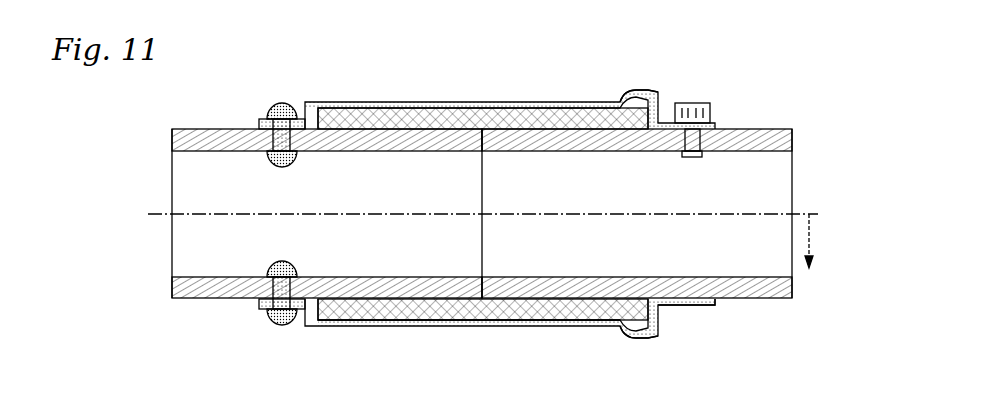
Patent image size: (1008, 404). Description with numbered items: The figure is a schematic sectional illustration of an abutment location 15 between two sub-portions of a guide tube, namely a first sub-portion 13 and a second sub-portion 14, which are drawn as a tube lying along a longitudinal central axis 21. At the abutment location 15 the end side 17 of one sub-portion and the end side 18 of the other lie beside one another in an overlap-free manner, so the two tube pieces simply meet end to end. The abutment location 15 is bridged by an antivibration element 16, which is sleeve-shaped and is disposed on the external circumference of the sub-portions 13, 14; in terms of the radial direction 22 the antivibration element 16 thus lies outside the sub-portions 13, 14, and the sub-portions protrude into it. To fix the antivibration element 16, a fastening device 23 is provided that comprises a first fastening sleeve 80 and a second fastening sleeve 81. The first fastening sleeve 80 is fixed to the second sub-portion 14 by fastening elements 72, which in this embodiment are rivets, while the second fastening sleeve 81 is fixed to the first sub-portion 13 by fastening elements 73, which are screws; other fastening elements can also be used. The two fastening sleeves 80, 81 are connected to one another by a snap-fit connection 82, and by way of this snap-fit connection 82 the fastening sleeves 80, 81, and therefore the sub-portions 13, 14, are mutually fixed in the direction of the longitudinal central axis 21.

The first sub-portion 13 is at (772, 130).
The second sub-portion 14 is at (195, 135).
The abutment location 15 is at (485, 131).
The antivibration element 16 is at (413, 112).
The end side 17 is at (498, 283).
The end side 18 is at (516, 300).
The longitudinal central axis 21 is at (468, 188).
The radial direction 22 is at (821, 241).
The fastening device 23 is at (603, 84).
The fastening elements 72 is at (272, 106).
The fastening elements 73 is at (700, 103).
The first fastening sleeve 80 is at (382, 328).
The second fastening sleeve 81 is at (668, 308).
The snap-fit connection 82 is at (630, 340).